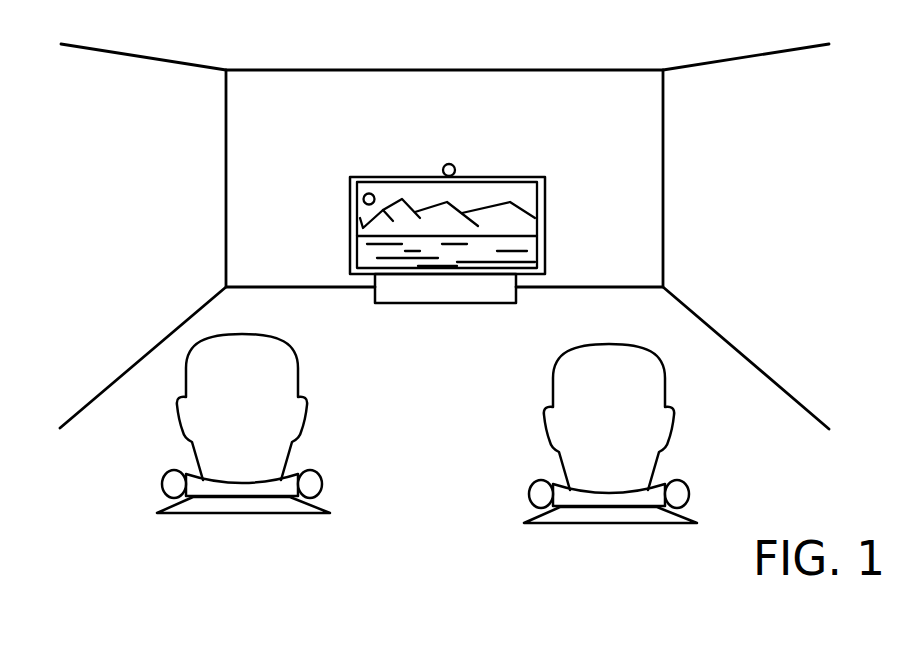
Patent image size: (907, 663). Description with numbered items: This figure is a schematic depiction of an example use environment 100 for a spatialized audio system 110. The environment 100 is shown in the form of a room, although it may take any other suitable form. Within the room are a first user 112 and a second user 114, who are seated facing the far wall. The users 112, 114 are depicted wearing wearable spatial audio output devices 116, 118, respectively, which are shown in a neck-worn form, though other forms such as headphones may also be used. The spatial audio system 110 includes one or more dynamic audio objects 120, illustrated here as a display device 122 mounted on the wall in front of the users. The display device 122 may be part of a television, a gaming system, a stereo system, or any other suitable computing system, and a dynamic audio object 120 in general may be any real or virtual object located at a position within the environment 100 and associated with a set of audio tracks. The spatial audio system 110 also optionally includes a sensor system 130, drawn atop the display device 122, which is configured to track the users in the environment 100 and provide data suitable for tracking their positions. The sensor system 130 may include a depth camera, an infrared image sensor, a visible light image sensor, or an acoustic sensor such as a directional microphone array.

The use environment 100 is at (605, 28).
The spatialized audio system 110 is at (739, 237).
The first user 112 is at (257, 473).
The second user 114 is at (610, 433).
The wearable spatial audio output device 116 is at (160, 485).
The wearable spatial audio output device 118 is at (566, 516).
The dynamic audio object 120 is at (557, 153).
The display device 122 is at (376, 177).
The sensor system 130 is at (449, 164).